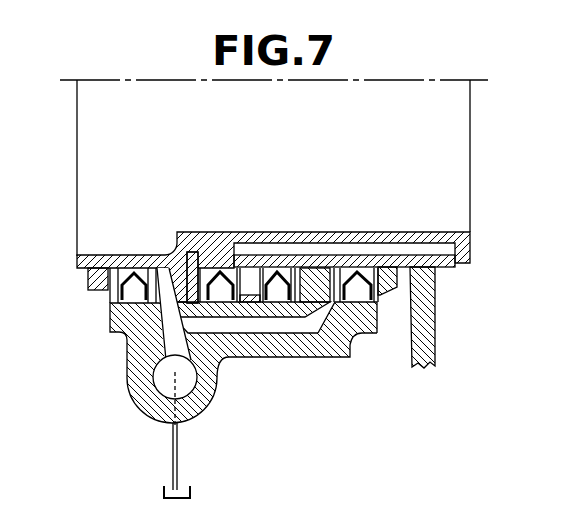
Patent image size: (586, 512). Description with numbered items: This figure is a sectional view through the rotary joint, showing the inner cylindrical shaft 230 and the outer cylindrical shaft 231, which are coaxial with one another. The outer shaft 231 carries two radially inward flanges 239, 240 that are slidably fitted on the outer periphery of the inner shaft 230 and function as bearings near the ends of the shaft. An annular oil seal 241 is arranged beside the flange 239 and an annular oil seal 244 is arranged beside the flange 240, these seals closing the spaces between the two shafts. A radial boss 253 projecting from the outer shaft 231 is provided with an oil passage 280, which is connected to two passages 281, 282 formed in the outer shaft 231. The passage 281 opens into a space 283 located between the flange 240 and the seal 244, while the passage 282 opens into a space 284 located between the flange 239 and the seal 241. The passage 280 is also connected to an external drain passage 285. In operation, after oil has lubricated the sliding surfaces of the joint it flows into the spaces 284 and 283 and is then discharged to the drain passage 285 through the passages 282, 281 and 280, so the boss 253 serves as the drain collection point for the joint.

The inner cylindrical shaft 230 is at (288, 262).
The outer cylindrical shaft 231 is at (276, 350).
The radially inward flange 239 is at (170, 277).
The radially inward flange 240 is at (315, 268).
The annular oil seal 241 is at (133, 288).
The annular oil seal 244 is at (368, 256).
The radial boss 253 is at (132, 393).
The oil passage 280 is at (187, 385).
The oil passage 281 is at (292, 325).
The oil passage 282 is at (150, 330).
The space 283 is at (360, 330).
The space 284 is at (163, 322).
The external drain passage 285 is at (177, 450).